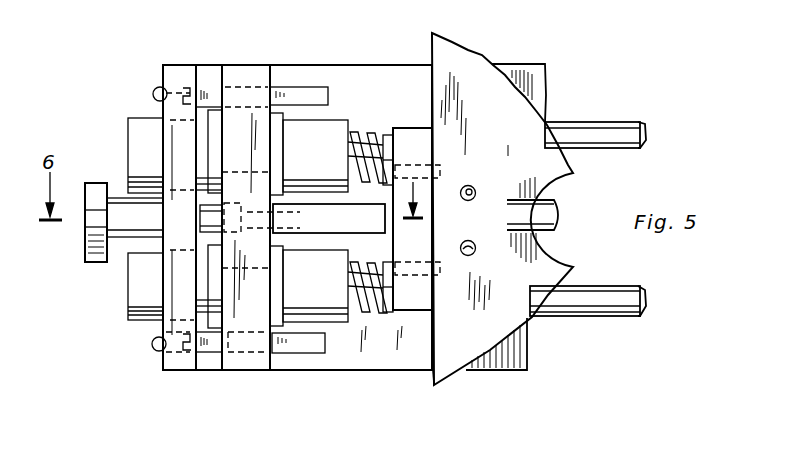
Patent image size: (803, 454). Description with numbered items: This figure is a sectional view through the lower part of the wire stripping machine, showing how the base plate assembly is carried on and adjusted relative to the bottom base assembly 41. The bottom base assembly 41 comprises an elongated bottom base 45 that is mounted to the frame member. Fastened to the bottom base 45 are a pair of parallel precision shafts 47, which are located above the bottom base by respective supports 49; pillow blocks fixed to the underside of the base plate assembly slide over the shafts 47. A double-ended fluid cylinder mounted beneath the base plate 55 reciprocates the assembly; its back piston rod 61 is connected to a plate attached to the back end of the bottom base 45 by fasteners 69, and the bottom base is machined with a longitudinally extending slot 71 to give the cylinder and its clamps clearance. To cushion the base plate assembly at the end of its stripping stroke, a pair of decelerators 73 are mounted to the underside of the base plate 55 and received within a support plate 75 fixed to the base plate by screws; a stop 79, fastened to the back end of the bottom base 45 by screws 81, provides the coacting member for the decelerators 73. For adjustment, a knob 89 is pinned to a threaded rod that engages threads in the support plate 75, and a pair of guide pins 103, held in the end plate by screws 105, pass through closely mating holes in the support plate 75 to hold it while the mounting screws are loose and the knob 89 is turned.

The bottom base assembly 41 is at (452, 378).
The bottom base 45 is at (443, 378).
The precision shafts 47 is at (626, 121).
The supports 49 is at (586, 138).
The base plate 55 is at (404, 358).
The back piston rod 61 is at (546, 215).
The fasteners 69 is at (465, 201).
The slot 71 is at (527, 257).
The decelerators 73 is at (336, 120).
The support plate 75 is at (235, 363).
The stop 79 is at (416, 128).
The screws 81 is at (388, 190).
The knob 89 is at (87, 262).
The guide pins 103 is at (318, 87).
The screws 105 is at (153, 94).